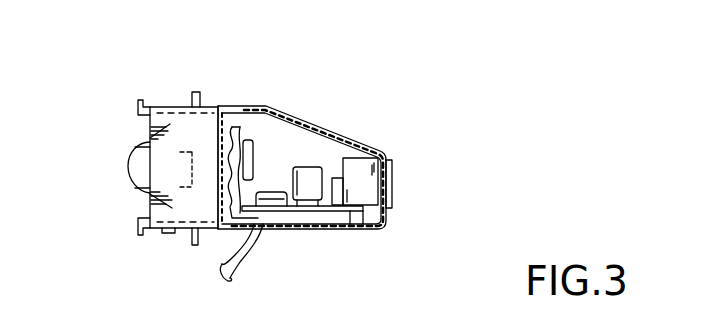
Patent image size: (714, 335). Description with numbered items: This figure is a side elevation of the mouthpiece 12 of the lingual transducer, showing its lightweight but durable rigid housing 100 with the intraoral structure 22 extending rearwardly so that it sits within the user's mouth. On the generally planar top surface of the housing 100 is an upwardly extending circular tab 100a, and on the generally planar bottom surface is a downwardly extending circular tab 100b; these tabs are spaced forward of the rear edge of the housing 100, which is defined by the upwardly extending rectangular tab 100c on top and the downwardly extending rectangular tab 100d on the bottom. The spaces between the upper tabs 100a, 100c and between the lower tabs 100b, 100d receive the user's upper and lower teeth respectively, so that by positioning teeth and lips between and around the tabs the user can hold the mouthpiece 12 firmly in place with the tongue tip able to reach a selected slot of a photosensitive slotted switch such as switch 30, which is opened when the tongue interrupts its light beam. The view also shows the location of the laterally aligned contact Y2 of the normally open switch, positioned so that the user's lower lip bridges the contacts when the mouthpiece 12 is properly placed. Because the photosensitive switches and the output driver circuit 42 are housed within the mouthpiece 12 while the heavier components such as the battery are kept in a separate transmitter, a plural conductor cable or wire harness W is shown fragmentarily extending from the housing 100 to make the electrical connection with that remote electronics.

The mouthpiece 12 is at (363, 56).
The intraoral structure 22 is at (152, 98).
The photosensitive slotted switch 30 is at (148, 148).
The output driver circuit 42 is at (393, 170).
The housing 100 is at (330, 133).
The upwardly extending circular tab 100a is at (201, 100).
The downwardly extending circular tab 100b is at (195, 247).
The upwardly extending rectangular tab 100c is at (140, 104).
The downwardly extending rectangular tab 100d is at (140, 232).
The electrical contact Y2 is at (167, 235).
The plural conductor cable or wire harness W is at (265, 247).